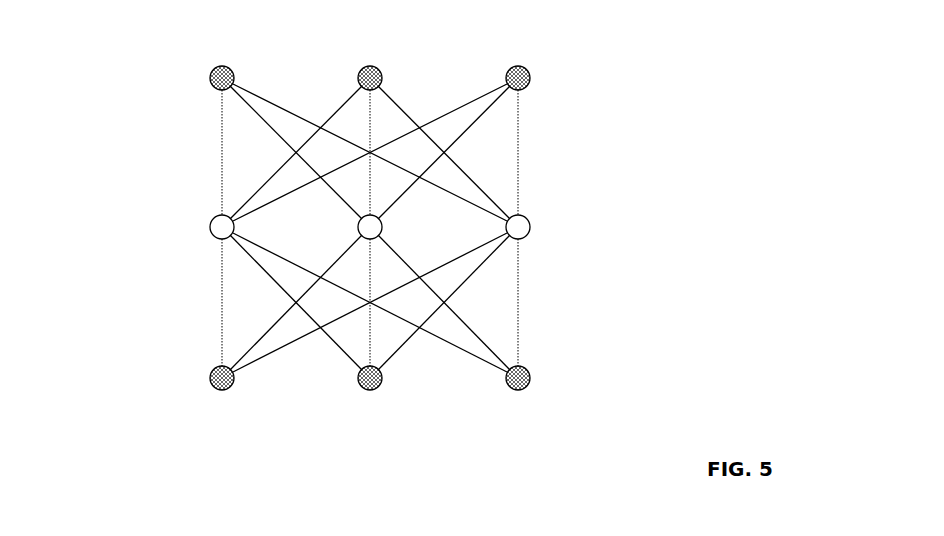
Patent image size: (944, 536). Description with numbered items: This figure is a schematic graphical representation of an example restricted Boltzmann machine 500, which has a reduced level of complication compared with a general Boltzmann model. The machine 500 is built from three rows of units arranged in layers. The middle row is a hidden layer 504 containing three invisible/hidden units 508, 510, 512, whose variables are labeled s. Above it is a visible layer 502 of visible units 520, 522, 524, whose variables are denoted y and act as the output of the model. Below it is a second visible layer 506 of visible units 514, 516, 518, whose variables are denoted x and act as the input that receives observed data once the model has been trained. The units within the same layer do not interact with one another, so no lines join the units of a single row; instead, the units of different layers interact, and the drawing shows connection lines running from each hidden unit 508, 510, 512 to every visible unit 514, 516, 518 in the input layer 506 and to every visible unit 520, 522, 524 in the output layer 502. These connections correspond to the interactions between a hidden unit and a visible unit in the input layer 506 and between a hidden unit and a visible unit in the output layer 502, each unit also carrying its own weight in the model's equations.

The restricted Boltzmann machine 500 is at (125, 42).
The visible layer 502 is at (196, 80).
The hidden layer 504 is at (196, 231).
The visible layer 506 is at (196, 377).
The hidden unit 508 is at (233, 231).
The hidden unit 510 is at (381, 231).
The hidden unit 512 is at (529, 222).
The visible unit 514 is at (222, 390).
The visible unit 516 is at (370, 390).
The visible unit 518 is at (529, 372).
The visible unit 520 is at (230, 67).
The visible unit 522 is at (375, 67).
The visible unit 524 is at (529, 72).